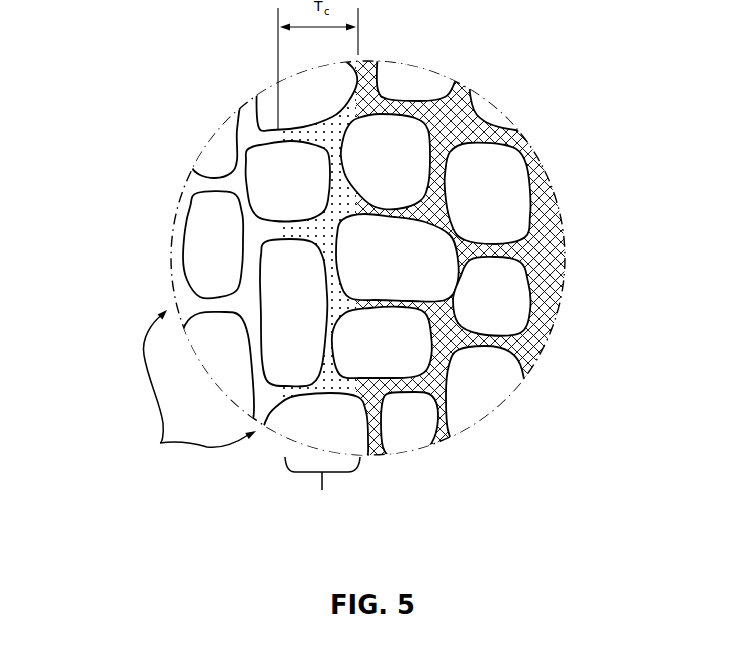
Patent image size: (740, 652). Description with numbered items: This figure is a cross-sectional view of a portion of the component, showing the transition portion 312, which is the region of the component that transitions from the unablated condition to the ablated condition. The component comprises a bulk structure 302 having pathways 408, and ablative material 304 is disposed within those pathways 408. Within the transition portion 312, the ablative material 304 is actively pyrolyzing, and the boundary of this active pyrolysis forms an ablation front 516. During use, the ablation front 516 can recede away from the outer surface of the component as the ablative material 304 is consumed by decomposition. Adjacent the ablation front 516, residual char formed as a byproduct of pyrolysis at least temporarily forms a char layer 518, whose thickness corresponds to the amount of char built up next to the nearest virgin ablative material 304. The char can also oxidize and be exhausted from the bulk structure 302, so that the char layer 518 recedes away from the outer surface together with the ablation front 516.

The transition portion 312 is at (165, 68).
The bulk structure 302 is at (410, 77).
The ablative material 304 is at (547, 173).
The pathways 408 is at (188, 392).
The ablation front 516 is at (378, 401).
The char layer 518 is at (322, 487).